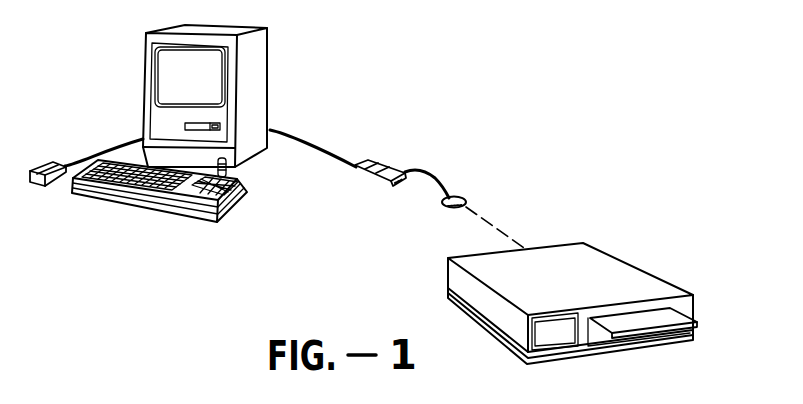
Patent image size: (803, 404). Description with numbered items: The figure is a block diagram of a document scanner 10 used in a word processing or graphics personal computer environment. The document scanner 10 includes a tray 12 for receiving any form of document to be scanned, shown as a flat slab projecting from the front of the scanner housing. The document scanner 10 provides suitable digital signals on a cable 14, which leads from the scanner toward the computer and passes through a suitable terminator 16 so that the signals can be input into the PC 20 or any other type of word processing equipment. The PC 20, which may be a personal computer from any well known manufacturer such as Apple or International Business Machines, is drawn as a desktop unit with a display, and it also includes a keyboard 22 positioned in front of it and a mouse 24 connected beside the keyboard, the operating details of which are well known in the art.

The document scanner 10 is at (625, 260).
The tray 12 is at (633, 322).
The cable 14 is at (448, 196).
The terminator 16 is at (383, 165).
The PC 20 is at (260, 52).
The keyboard 22 is at (140, 202).
The mouse 24 is at (42, 167).